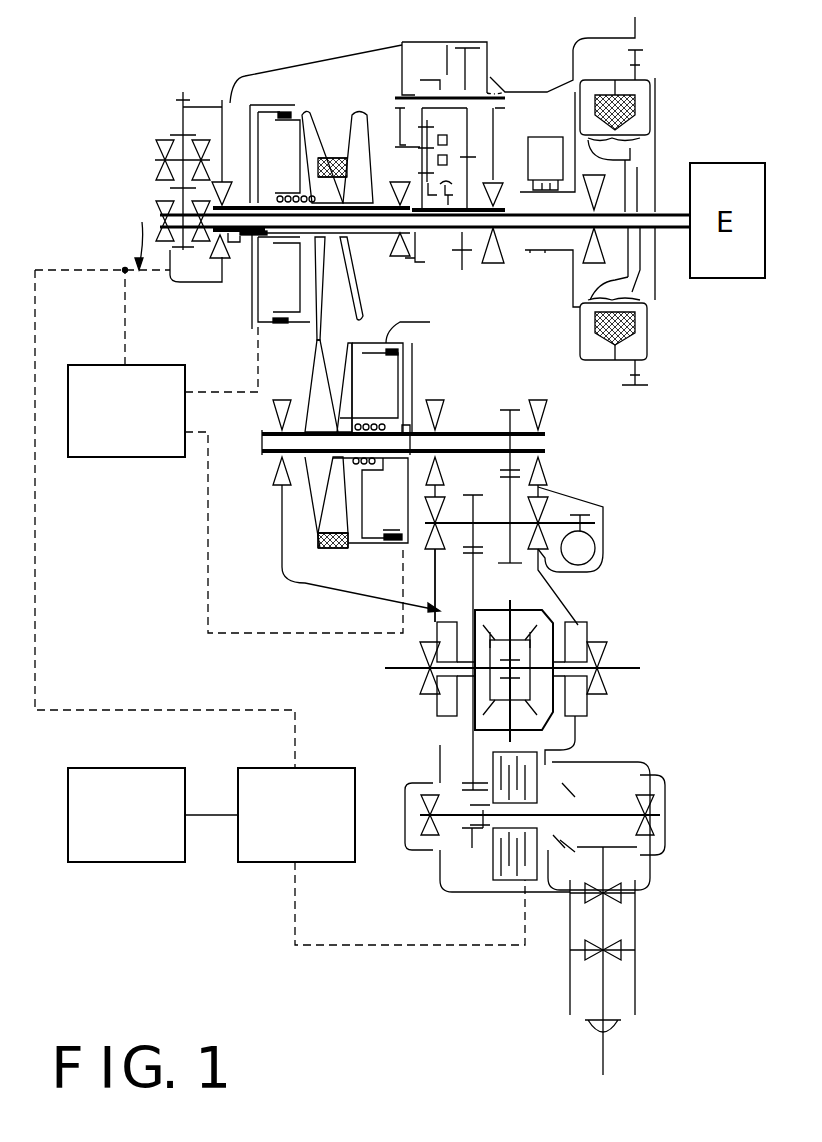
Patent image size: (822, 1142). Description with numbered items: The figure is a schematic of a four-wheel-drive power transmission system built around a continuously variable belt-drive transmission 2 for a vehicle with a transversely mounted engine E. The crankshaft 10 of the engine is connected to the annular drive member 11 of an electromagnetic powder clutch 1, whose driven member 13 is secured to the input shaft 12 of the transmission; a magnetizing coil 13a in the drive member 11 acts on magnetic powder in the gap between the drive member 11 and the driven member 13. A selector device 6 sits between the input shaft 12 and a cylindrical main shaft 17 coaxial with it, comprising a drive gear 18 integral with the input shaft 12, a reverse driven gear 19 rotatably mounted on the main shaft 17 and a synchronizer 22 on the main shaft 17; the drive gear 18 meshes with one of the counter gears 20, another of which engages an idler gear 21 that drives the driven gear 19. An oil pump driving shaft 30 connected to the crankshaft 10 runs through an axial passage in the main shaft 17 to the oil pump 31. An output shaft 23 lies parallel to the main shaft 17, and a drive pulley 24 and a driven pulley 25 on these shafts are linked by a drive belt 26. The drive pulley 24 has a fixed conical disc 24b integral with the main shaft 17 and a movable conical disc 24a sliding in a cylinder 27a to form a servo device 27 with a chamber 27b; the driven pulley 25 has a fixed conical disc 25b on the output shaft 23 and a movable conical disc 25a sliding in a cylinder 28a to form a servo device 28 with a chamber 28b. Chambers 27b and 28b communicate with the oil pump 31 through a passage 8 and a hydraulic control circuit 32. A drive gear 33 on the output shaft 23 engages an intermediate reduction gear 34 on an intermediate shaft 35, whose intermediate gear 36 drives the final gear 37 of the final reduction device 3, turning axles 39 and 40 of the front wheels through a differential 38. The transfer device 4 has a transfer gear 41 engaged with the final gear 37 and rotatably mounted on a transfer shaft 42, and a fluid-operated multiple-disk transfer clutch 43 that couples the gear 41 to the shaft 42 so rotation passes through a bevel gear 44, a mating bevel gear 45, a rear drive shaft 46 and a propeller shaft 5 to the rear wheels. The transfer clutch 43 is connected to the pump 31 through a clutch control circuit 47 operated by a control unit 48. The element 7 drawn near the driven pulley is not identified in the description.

The electromagnetic powder clutch 1 is at (603, 70).
The continuously variable belt-drive transmission 2 is at (349, 98).
The final reduction device 3 is at (550, 596).
The transfer device 4 is at (618, 776).
The propeller shaft 5 is at (608, 1032).
The selector device 6 is at (446, 60).
The secondary pulley 7 is at (300, 523).
The passage 8 is at (132, 241).
The crankshaft 10 is at (668, 228).
The annular drive member 11 is at (645, 106).
The input shaft 12 is at (513, 250).
The driven member 13 is at (633, 143).
The magnetizing coil 13a is at (632, 94).
The main shaft 17 is at (397, 240).
The drive gear 18 is at (462, 270).
The reverse driven gear 19 is at (415, 262).
The counter gears 20 is at (470, 117).
The idler gear 21 is at (420, 147).
The synchronizer 22 is at (455, 183).
The output shaft 23 is at (466, 422).
The drive pulley 24 is at (300, 96).
The axially movable conical disc 24a is at (312, 116).
The fixed conical disc 24b is at (364, 114).
The driven pulley 25 is at (367, 548).
The movable conical disc 25a is at (400, 322).
The fixed conical disc 25b is at (306, 372).
The drive belt 26 is at (319, 550).
The servo device 27 is at (230, 100).
The cylinder 27a is at (250, 105).
The chamber 27b is at (270, 290).
The servo device 28 is at (412, 375).
The cylinder 28a is at (405, 400).
The chamber 28b is at (398, 505).
The oil pump driving shaft 30 is at (648, 214).
The oil pump 31 is at (178, 126).
The oil hydraulic control circuit 32 is at (102, 457).
The drive gear 33 is at (510, 410).
The intermediate reduction gear 34 is at (502, 565).
The intermediate shaft 35 is at (558, 515).
The intermediate gear 36 is at (474, 495).
The final gear 37 is at (472, 580).
The differential 38 is at (562, 748).
The axle 39 is at (396, 670).
The axle 40 is at (632, 668).
The transfer gear 41 is at (470, 850).
The transfer shaft 42 is at (620, 808).
The transfer clutch 43 is at (525, 880).
The bevel gear 44 is at (562, 796).
The bevel gear 45 is at (640, 866).
The rear drive shaft 46 is at (605, 916).
The clutch control circuit 47 is at (279, 768).
The control unit 48 is at (143, 768).